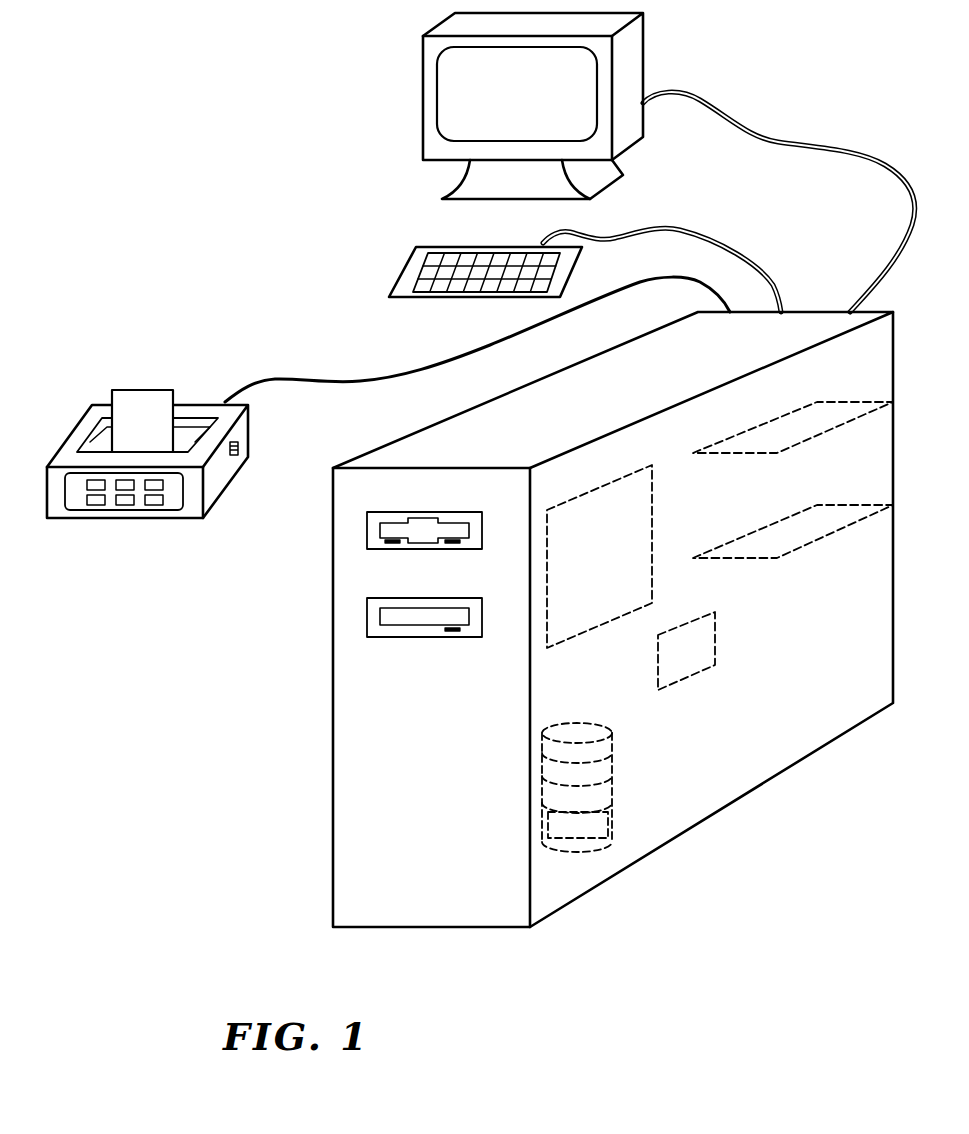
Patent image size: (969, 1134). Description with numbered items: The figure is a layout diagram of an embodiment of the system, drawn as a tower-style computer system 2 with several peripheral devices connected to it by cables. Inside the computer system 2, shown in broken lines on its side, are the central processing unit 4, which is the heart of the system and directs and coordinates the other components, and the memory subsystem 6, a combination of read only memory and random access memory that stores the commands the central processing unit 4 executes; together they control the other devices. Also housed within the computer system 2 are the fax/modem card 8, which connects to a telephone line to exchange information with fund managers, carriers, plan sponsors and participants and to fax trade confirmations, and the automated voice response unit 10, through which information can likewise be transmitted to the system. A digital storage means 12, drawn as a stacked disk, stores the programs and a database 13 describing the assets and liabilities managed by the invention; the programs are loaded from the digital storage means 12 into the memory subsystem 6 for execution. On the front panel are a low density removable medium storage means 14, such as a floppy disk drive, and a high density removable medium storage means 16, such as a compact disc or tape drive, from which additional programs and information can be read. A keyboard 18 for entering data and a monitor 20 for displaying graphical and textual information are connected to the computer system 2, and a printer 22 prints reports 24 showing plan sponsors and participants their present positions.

The computer system 2 is at (477, 430).
The central processing unit 4 is at (712, 652).
The memory subsystem 6 is at (640, 533).
The fax/modem card 8 is at (790, 532).
The automated voice response unit 10 is at (823, 410).
The digital storage means 12 is at (577, 728).
The database 13 is at (597, 827).
The low density removable medium storage means 14 is at (377, 546).
The high density removable medium storage means 16 is at (388, 630).
The keyboard 18 is at (403, 270).
The monitor 20 is at (422, 88).
The printer 22 is at (100, 402).
The reports 24 is at (148, 390).